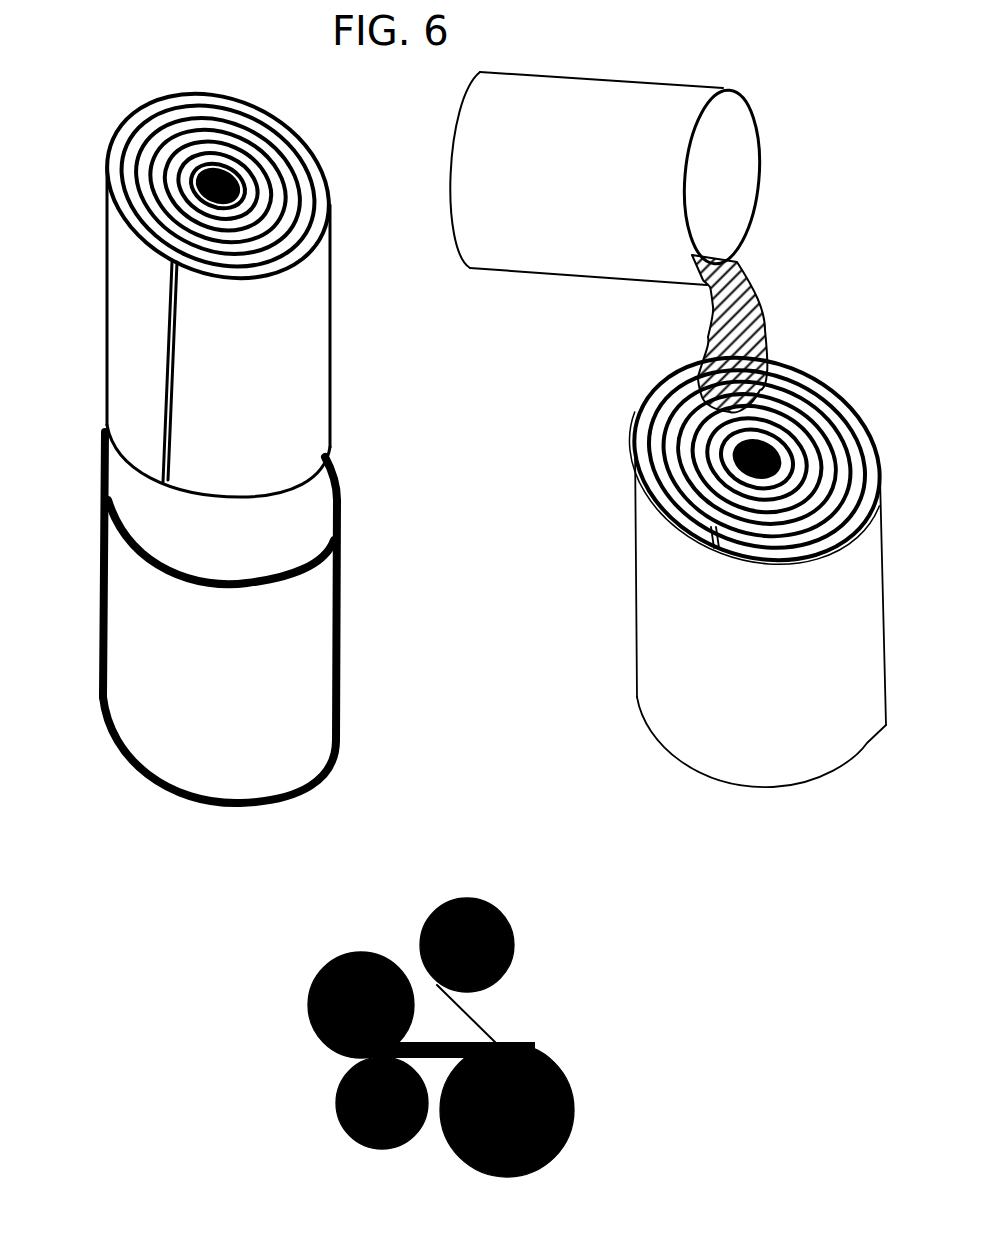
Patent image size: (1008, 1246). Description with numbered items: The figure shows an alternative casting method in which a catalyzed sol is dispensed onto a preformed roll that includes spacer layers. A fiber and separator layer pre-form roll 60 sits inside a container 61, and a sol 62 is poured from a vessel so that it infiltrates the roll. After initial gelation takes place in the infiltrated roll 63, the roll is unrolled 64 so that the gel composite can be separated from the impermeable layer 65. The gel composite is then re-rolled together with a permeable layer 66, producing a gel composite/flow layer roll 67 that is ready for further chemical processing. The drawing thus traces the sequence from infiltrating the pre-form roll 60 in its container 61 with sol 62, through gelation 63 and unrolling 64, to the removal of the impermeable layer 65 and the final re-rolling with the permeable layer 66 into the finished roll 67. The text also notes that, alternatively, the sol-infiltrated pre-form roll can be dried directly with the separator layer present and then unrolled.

The fiber and separator layer pre-form roll 60 is at (300, 340).
The container 61 is at (147, 735).
The sol 62 is at (747, 292).
The initial gelation 63 is at (655, 555).
The unrolled gel composite 64 is at (310, 1012).
The impermeable layer 65 is at (355, 1138).
The permeable layer 66 is at (515, 933).
The gel composite/flow layer roll 67 is at (560, 1063).